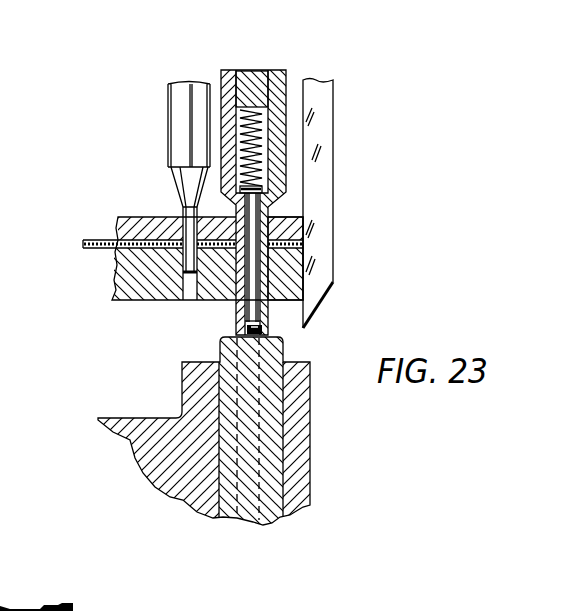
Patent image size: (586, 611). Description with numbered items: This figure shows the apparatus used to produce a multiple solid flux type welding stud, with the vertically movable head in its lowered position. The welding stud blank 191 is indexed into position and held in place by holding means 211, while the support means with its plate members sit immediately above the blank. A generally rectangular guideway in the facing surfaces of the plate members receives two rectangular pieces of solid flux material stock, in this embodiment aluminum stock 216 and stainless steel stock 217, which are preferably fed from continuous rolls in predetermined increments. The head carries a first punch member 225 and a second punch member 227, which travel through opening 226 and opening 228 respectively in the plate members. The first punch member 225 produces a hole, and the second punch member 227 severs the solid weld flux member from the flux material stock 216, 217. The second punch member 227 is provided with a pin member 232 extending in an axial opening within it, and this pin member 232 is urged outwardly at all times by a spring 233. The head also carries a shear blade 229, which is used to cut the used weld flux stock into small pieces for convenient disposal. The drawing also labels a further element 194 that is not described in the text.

The blank 191 is at (270, 522).
The contact tip 194 is at (268, 330).
The holding means 211 is at (190, 400).
The aluminum stock 216 is at (90, 250).
The stainless steel stock 217 is at (90, 240).
The first punch member 225 is at (170, 128).
The opening 226 is at (172, 222).
The second punch member 227 is at (221, 72).
The opening 228 is at (300, 226).
The shear blade 229 is at (322, 180).
The pin member 232 is at (234, 304).
The spring 233 is at (253, 107).